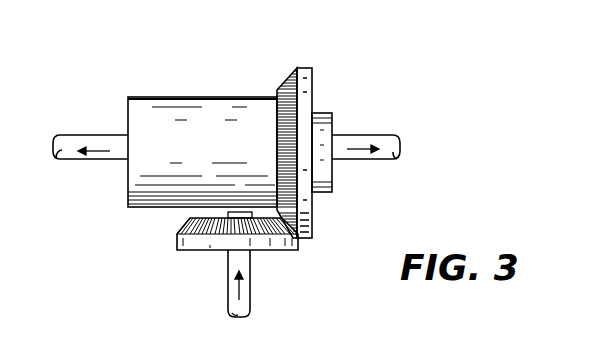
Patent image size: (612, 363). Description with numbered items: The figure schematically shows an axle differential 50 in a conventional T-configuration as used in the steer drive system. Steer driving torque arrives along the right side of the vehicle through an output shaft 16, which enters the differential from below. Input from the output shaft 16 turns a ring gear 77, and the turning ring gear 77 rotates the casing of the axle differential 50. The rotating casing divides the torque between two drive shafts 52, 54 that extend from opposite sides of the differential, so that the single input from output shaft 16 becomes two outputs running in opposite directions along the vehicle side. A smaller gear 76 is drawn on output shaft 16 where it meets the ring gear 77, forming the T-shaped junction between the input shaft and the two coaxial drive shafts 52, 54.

The axle differential 50 is at (147, 68).
The drive shaft 52 is at (82, 140).
The drive shaft 54 is at (365, 138).
The ring gear 77 is at (287, 78).
The bevel pinion gear 76 is at (188, 227).
The output shaft 16 is at (253, 278).